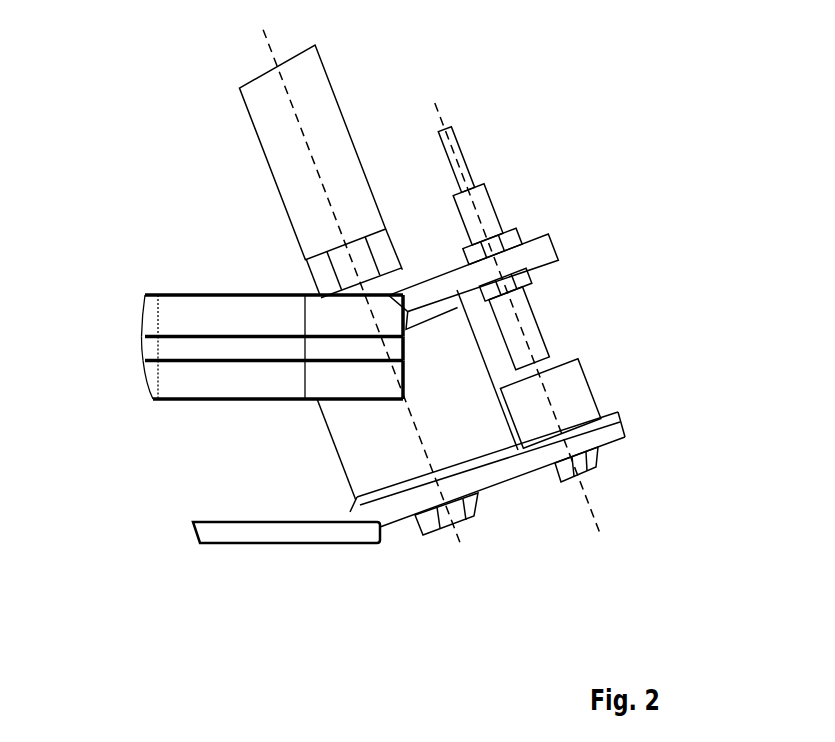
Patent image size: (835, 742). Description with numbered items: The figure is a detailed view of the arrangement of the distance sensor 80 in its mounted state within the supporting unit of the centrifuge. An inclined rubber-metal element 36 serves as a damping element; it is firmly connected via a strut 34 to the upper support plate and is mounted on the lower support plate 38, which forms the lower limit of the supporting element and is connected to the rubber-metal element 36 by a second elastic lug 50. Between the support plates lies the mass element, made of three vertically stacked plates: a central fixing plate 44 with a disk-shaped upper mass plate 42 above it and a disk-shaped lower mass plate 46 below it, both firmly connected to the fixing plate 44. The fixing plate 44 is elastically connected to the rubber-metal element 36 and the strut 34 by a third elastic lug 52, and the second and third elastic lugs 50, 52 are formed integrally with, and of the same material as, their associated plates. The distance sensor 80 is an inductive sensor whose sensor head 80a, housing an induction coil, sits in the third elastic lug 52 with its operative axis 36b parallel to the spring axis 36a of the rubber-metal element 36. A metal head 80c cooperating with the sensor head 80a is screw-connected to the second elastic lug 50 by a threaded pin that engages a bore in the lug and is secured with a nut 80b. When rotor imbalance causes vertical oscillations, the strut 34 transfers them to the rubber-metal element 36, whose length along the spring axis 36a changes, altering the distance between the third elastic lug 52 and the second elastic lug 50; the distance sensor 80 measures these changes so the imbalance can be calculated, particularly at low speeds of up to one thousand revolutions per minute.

The strut 34 is at (308, 145).
The rubber-metal element 36 is at (430, 395).
The spring axis 36a is at (273, 47).
The operative axis 36b is at (437, 105).
The lower support plate 38 is at (255, 530).
The upper mass plate 42 is at (217, 317).
The fixing plate 44 is at (208, 348).
The lower mass plate 46 is at (207, 380).
The second elastic lug 50 is at (523, 463).
The third elastic lug 52 is at (487, 267).
The distance sensor 80 is at (672, 319).
The sensor head 80a is at (519, 321).
The nut 80b is at (586, 466).
The metal head 80c is at (540, 400).